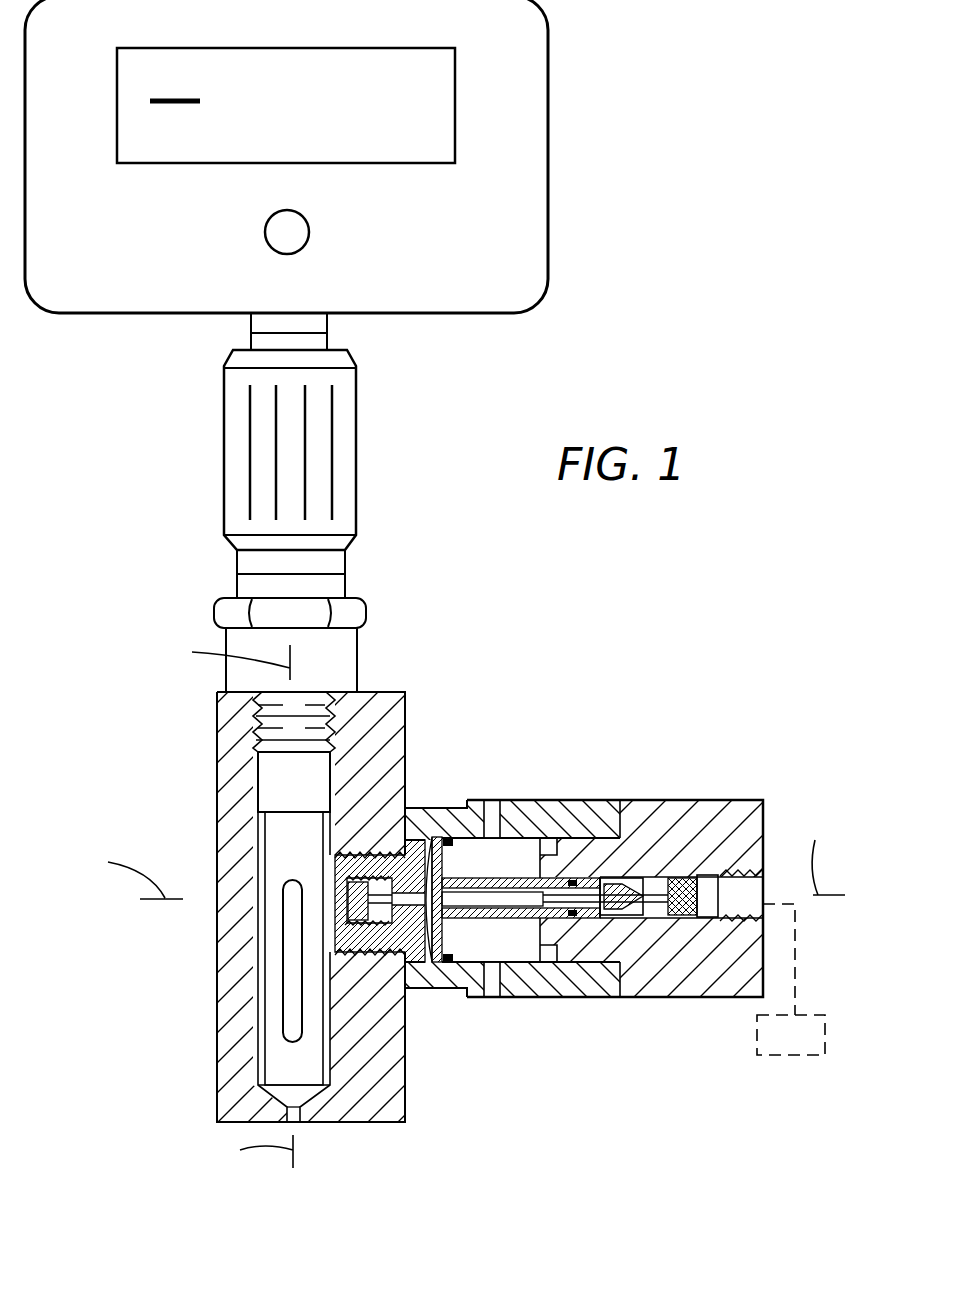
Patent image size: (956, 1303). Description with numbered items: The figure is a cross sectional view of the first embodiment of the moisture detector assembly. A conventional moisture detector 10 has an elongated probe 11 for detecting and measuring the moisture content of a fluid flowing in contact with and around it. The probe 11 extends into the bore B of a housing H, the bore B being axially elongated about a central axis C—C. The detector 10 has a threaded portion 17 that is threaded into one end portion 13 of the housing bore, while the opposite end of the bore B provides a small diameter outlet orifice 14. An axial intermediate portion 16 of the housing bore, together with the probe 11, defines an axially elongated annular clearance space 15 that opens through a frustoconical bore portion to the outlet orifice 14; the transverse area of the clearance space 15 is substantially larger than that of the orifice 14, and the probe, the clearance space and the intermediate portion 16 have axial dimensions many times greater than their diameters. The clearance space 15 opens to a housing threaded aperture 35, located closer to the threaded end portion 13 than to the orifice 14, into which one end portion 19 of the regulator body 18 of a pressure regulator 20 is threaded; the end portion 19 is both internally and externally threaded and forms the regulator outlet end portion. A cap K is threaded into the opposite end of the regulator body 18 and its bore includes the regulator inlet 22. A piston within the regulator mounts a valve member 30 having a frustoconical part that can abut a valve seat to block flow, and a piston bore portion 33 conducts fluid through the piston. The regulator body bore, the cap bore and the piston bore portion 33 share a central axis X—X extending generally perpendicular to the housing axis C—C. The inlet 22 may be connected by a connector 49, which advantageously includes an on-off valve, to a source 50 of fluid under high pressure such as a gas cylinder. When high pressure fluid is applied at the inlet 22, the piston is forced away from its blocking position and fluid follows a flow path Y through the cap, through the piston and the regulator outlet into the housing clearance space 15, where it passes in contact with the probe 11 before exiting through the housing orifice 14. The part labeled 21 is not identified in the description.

The moisture detector 10 is at (552, 247).
The probe 11 is at (280, 823).
The housing bore end portion 13 is at (335, 722).
The outlet orifice 14 is at (307, 1110).
The annular clearance space 15 is at (263, 963).
The axial intermediate portion of housing bore 16 is at (360, 805).
The threaded portion 17 is at (295, 722).
The regulator body 18 is at (552, 815).
The regulator body end portion 19 is at (362, 866).
The pressure regulator 20 is at (765, 801).
The valve body 21 is at (705, 815).
The regulator inlet 22 is at (745, 878).
The valve member 30 is at (622, 898).
The piston bore portion 33 is at (512, 915).
The housing threaded aperture 35 is at (385, 957).
The connector 49 is at (795, 985).
The source of fluid under high pressure 50 is at (791, 1035).
The housing bore B is at (262, 1033).
The housing central axis C is at (230, 915).
The housing H is at (228, 779).
The cap K is at (705, 980).
The regulator central axis X is at (459, 858).
The fluid flow path Y is at (518, 895).